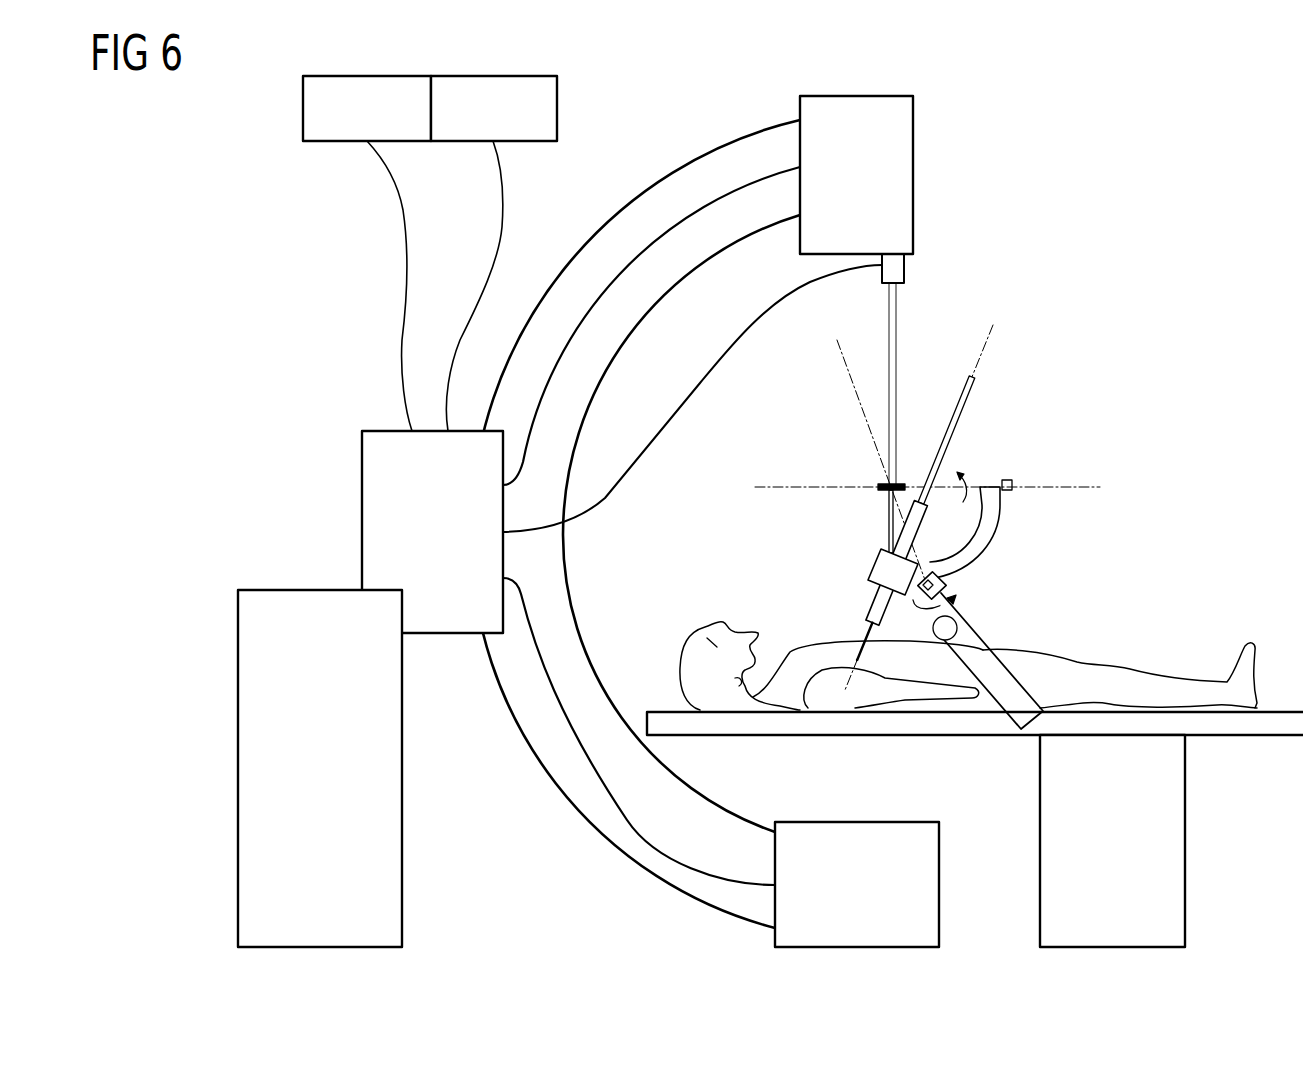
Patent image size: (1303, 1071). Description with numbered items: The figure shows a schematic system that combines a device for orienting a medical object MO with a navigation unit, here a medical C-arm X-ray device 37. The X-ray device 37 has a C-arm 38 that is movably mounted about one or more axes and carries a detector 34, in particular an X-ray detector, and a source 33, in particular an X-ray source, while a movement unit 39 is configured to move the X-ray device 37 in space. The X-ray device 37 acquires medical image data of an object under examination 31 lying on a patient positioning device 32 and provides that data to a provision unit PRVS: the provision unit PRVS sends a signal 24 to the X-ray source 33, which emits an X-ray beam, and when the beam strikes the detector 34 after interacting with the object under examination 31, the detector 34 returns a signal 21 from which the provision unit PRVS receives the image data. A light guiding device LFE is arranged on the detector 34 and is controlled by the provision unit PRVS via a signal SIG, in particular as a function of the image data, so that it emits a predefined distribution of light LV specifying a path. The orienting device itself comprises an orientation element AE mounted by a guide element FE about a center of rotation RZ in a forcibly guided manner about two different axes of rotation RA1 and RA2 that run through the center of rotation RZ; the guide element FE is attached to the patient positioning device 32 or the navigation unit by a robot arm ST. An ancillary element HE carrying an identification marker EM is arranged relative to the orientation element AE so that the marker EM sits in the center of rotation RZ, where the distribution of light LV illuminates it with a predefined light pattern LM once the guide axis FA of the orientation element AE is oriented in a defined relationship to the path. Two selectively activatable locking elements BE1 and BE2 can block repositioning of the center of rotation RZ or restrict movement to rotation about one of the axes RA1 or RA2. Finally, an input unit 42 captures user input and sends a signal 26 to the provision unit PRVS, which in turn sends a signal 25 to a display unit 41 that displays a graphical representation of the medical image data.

The signal 21 is at (632, 264).
The signal 24 is at (538, 657).
The signal 25 is at (400, 211).
The signal 26 is at (503, 195).
The object under examination 31 is at (1155, 687).
The patient positioning device 32 is at (1243, 736).
The source 33 is at (939, 883).
The detector 34 is at (913, 163).
The medical C-arm X-ray device 37 is at (762, 112).
The C-arm 38 is at (701, 158).
The movement unit 39 is at (238, 705).
The display unit 41 is at (303, 110).
The input unit 42 is at (557, 103).
The provision unit PRVS is at (378, 431).
The signal SIG is at (626, 478).
The light guiding device LFE is at (906, 270).
The predefined distribution of light LV is at (897, 318).
The axis of rotation RA1 is at (775, 486).
The axis of rotation RA2 is at (846, 366).
The medical object MO is at (975, 388).
The center of rotation RZ is at (882, 476).
The predefined light pattern LM is at (905, 475).
The identification marker EM is at (880, 491).
The ancillary element HE is at (886, 528).
The orientation element AE is at (872, 590).
The guide element FE is at (995, 530).
The locking element BE1 is at (1005, 486).
The locking element BE2 is at (945, 576).
The robot arm ST is at (997, 690).
The guide axis FA is at (858, 690).